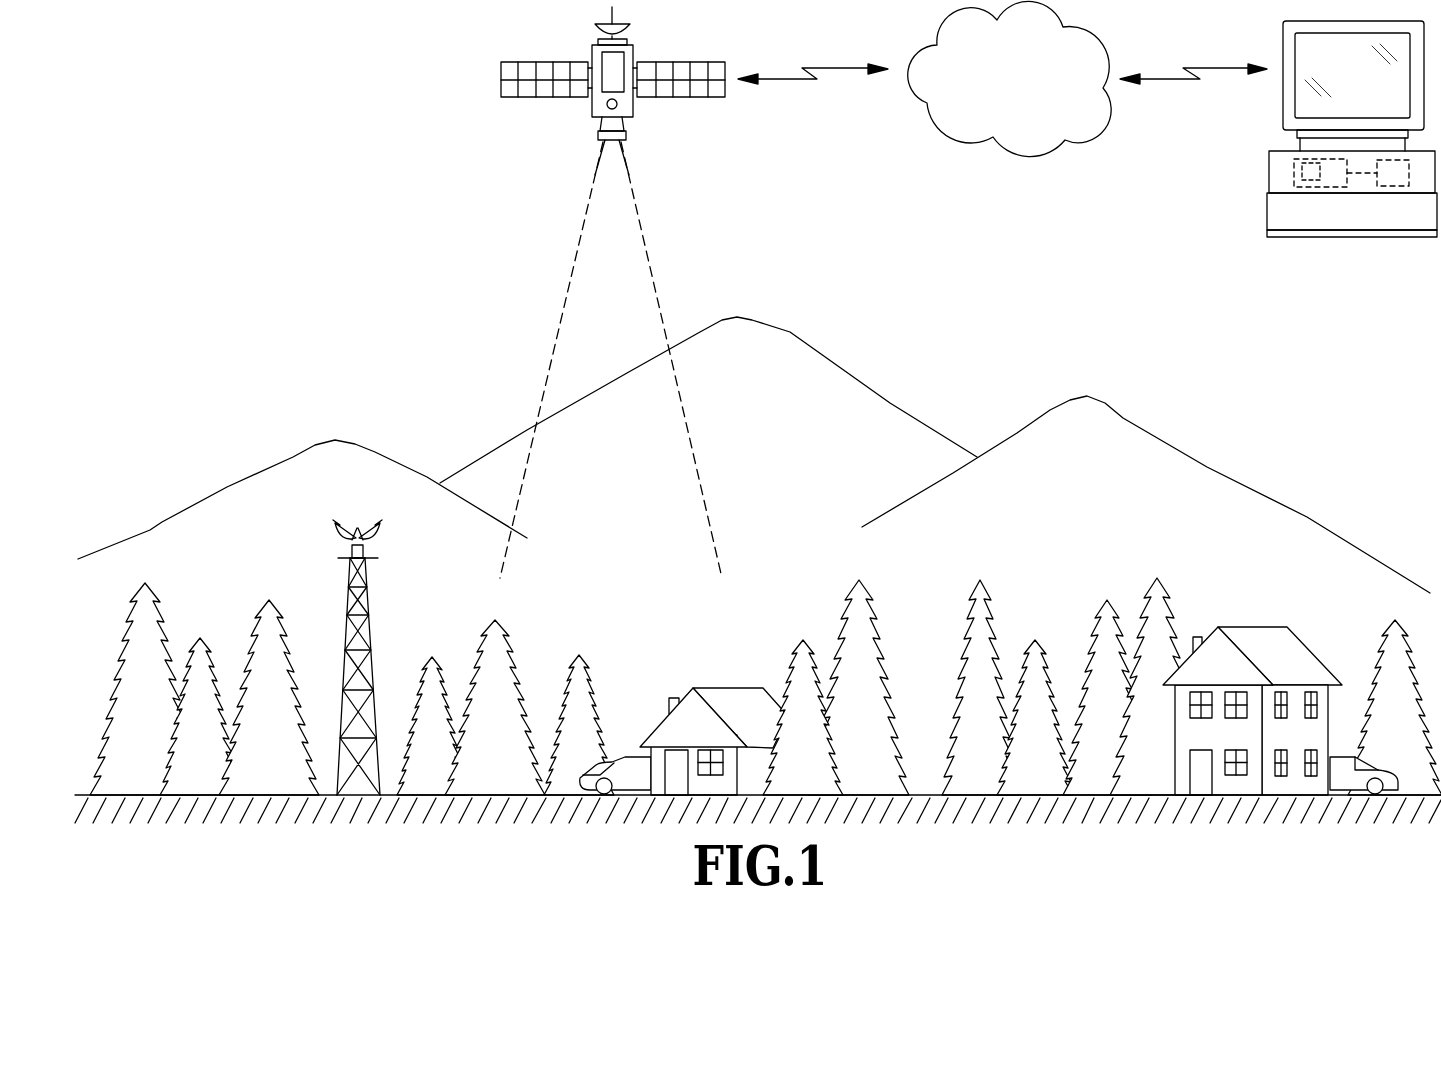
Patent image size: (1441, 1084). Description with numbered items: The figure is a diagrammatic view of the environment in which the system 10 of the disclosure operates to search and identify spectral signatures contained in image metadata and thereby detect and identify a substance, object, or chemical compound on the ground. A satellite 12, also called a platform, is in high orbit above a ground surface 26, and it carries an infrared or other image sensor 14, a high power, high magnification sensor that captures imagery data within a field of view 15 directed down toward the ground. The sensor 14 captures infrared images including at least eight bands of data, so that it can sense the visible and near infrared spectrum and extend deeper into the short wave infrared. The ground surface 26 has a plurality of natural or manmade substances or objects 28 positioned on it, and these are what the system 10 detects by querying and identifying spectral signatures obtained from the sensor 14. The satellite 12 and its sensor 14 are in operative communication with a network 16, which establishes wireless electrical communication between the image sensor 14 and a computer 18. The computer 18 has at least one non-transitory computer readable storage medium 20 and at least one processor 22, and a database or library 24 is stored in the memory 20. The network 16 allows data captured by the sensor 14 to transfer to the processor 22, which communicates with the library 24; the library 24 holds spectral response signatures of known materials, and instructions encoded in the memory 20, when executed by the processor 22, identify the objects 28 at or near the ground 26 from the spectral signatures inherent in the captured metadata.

The system 10 is at (283, 95).
The satellite 12 is at (541, 104).
The image sensor 14 is at (628, 126).
The field of view 15 is at (586, 213).
The network 16 is at (996, 88).
The computer 18 is at (1260, 163).
The non-transitory computer readable storage medium 20 is at (1336, 198).
The processor 22 is at (1395, 183).
The database or library 24 is at (1303, 188).
The ground surface 26 is at (307, 757).
The substances or objects 28 is at (276, 793).